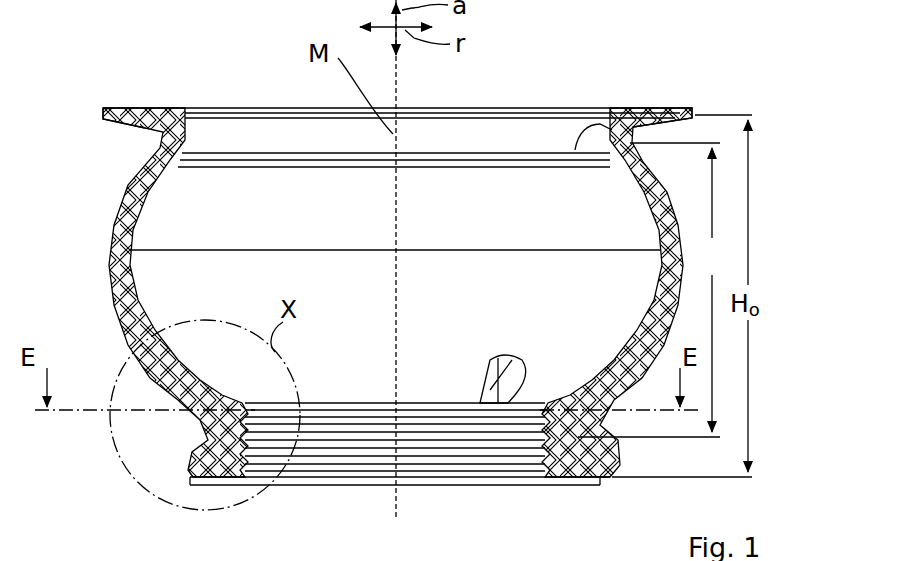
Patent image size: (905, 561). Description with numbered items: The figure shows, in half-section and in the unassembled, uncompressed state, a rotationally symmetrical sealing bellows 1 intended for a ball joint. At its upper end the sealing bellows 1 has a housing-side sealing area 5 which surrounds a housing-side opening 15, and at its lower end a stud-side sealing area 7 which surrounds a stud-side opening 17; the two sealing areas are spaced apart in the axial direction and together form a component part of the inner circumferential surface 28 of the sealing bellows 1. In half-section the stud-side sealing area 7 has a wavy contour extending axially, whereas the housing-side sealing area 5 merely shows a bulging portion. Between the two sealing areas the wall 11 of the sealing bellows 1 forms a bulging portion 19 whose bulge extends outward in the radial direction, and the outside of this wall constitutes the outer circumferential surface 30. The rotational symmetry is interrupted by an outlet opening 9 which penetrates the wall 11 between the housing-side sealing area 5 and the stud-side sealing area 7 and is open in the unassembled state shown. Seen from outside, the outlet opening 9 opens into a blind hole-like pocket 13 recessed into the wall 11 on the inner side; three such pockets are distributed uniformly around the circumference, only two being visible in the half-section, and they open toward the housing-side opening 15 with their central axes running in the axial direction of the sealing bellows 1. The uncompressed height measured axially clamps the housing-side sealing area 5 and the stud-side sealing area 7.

The sealing bellows 1 is at (500, 85).
The housing-side sealing area 5 is at (576, 152).
The stud-side sealing area 7 is at (520, 440).
The outlet opening 9 is at (160, 412).
The wall 11 is at (117, 225).
The pocket 13 is at (478, 365).
The housing-side opening 15 is at (546, 110).
The stud-side opening 17 is at (330, 488).
The bulging portion 19 is at (654, 290).
The inner circumferential surface 28 is at (142, 216).
The outer circumferential surface 30 is at (122, 210).